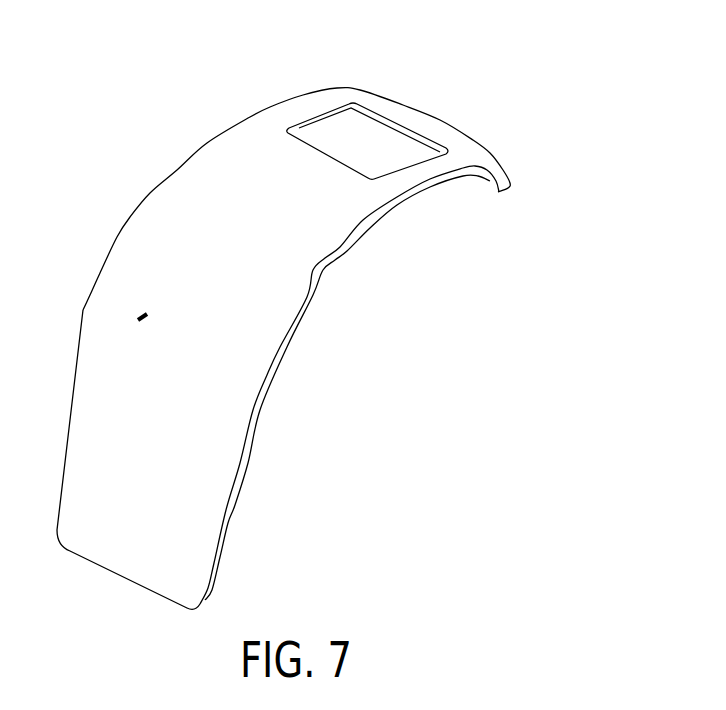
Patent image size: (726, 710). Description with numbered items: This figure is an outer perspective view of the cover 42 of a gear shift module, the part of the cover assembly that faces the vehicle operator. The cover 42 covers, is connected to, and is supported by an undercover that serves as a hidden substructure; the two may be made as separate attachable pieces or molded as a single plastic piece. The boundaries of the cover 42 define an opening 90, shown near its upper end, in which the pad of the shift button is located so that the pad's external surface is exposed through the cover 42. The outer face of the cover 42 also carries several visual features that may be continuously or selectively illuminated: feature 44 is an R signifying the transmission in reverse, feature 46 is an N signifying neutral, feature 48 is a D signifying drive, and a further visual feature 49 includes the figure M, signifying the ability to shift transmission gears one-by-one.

The cover 42 is at (558, 150).
The opening 90 is at (358, 138).
The visual feature 44 is at (260, 213).
The visual feature 46 is at (222, 260).
The visual feature 48 is at (195, 310).
The visual feature 49 is at (147, 267).